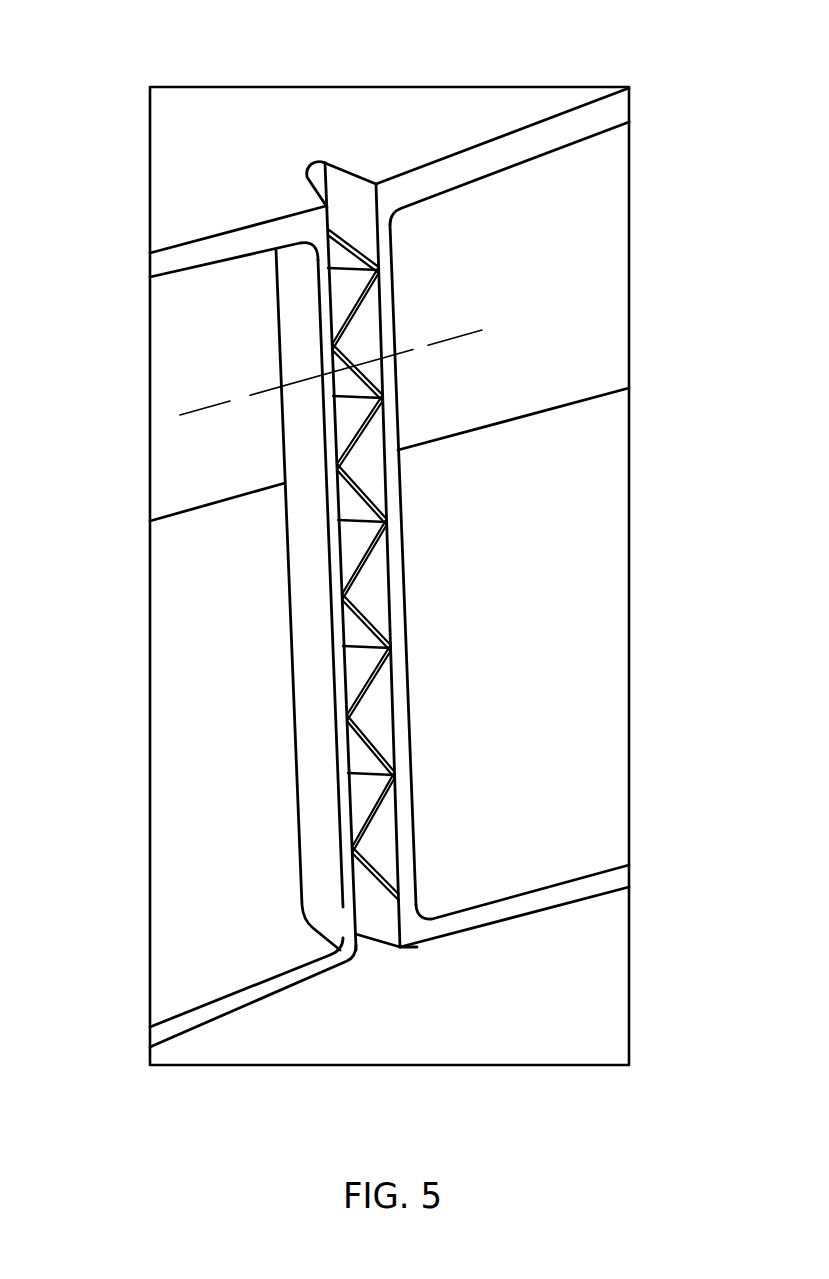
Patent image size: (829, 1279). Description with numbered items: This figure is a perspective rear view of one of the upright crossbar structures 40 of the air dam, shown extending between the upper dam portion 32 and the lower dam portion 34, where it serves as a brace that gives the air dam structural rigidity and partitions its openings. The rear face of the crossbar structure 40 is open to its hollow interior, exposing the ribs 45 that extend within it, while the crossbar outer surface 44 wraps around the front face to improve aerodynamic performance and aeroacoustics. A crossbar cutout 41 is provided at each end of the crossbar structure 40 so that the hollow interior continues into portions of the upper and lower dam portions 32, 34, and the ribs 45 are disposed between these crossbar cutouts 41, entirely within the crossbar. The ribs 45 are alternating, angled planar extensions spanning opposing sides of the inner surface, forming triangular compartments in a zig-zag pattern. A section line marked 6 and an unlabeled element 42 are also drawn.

The upper dam portion 32 is at (492, 113).
The lower dam portion 34 is at (565, 829).
The crossbar structure 40 is at (422, 405).
The crossbar cutout 41 is at (307, 185).
The side flange 42 is at (396, 250).
The crossbar outer surface 44 is at (375, 713).
The ribs 45 is at (340, 230).
The section line for FIG. 6 is at (205, 396).